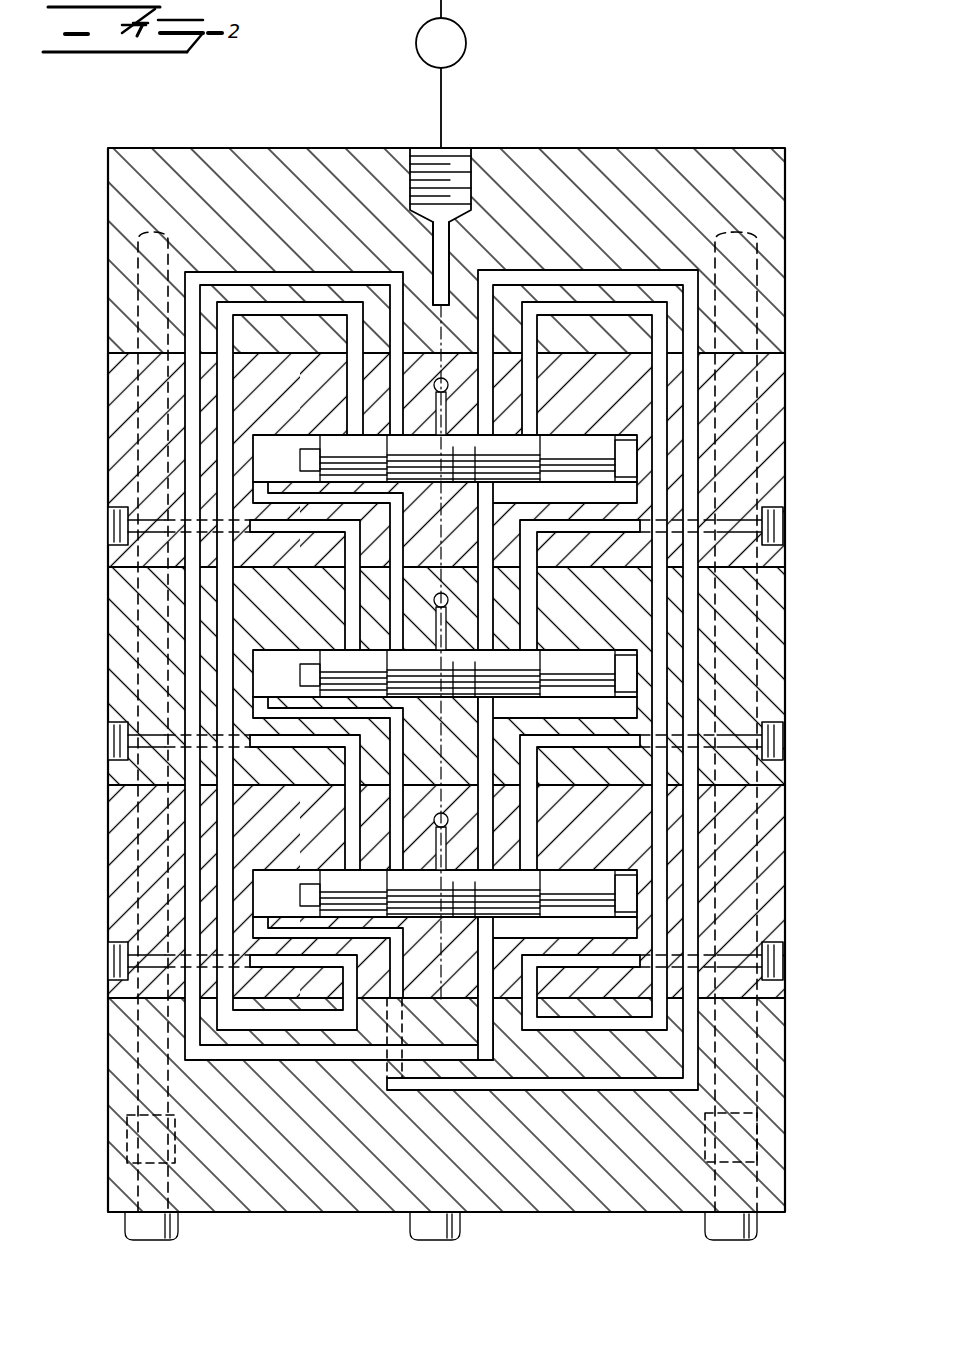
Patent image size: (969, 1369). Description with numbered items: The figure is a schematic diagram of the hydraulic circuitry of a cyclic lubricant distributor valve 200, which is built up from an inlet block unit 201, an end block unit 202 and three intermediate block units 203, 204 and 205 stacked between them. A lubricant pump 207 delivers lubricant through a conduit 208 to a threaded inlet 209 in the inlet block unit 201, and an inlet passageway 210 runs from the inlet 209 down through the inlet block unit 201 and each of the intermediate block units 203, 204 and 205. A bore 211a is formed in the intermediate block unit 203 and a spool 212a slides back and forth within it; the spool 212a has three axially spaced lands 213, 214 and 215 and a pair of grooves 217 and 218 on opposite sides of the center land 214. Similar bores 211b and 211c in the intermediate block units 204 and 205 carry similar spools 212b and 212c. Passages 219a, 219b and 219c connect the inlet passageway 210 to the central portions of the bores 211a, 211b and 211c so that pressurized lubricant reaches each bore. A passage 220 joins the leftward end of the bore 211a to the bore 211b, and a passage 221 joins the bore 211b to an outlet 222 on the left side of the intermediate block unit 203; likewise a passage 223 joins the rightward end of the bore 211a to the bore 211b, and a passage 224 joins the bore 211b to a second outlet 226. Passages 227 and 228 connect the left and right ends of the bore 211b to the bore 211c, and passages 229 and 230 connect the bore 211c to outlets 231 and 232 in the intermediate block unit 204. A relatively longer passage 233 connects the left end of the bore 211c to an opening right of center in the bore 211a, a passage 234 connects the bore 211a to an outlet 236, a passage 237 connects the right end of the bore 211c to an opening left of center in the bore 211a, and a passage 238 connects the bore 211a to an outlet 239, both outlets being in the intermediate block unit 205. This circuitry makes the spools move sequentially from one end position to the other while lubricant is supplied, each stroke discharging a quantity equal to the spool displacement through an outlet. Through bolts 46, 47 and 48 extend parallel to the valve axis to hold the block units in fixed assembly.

The cyclic lubricant distributor valve 200 is at (730, 126).
The inlet block unit 201 is at (787, 208).
The end block unit 202 is at (787, 1110).
The intermediate block unit 203 is at (787, 432).
The intermediate block unit 204 is at (787, 662).
The intermediate block unit 205 is at (787, 880).
The lubricant pump 207 is at (467, 47).
The conduit 208 is at (447, 121).
The threaded inlet 209 is at (462, 158).
The inlet passageway 210 is at (445, 250).
The bore 211a is at (553, 440).
The bore 211b is at (555, 656).
The bore 211c is at (553, 875).
The spool 212a is at (585, 452).
The spool 212b is at (585, 667).
The spool 212c is at (585, 887).
The land 213 is at (333, 445).
The center land 214 is at (450, 437).
The land 215 is at (604, 452).
The groove 217 is at (410, 450).
The groove 218 is at (515, 447).
The passage 219a is at (448, 385).
The passage 219b is at (448, 600).
The passage 219c is at (448, 820).
The passage 220 is at (272, 500).
The passage 221 is at (330, 522).
The outlet 222 is at (110, 520).
The passage 223 is at (622, 498).
The passage 224 is at (610, 522).
The second outlet 226 is at (785, 524).
The passage 227 is at (272, 718).
The passage 228 is at (622, 713).
The passage 229 is at (330, 740).
The passage 230 is at (610, 745).
The outlet 231 is at (110, 738).
The outlet 232 is at (785, 745).
The passage 233 is at (545, 1092).
The passage 234 is at (270, 1035).
The outlet 236 is at (110, 955).
The passage 237 is at (360, 1060).
The passage 238 is at (627, 1025).
The outlet 239 is at (785, 960).
The through bolt 46 is at (170, 1240).
The through bolt 47 is at (452, 1240).
The through bolt 48 is at (745, 1240).